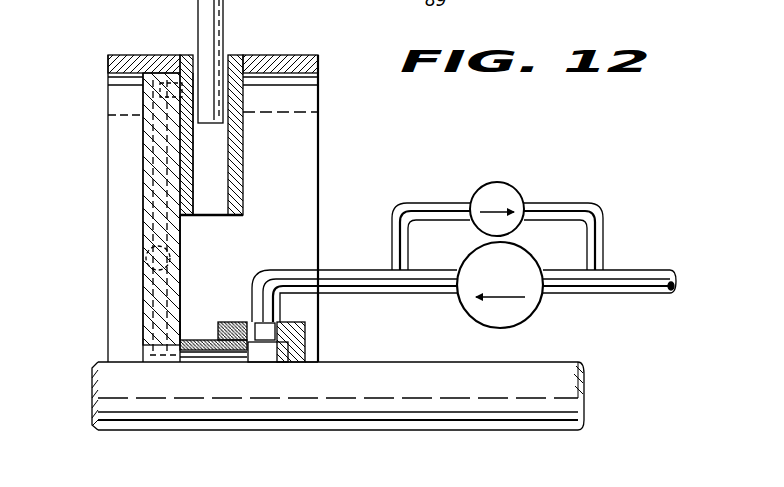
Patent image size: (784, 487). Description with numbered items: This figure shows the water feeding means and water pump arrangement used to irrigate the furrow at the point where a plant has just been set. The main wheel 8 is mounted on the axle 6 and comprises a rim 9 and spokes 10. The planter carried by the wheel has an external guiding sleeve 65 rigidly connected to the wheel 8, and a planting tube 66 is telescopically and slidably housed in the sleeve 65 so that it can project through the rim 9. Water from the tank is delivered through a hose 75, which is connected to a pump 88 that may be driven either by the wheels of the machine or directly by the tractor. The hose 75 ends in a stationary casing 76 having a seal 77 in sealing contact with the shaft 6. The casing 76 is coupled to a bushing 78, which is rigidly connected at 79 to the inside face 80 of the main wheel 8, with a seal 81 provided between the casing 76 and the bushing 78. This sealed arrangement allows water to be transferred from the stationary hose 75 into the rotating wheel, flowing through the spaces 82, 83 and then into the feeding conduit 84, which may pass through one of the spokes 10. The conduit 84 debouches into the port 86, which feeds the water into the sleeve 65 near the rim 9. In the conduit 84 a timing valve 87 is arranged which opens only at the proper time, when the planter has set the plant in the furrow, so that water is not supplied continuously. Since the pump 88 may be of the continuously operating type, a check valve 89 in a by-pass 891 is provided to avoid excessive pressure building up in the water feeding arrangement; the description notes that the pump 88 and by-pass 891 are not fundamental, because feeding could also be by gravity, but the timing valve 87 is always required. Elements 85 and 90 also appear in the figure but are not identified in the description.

The axle 6 is at (389, 428).
The main wheel 8 is at (100, 123).
The rim 9 is at (291, 55).
The spokes 10 is at (140, 163).
The external guiding sleeve 65 is at (243, 200).
The planting tube 66 is at (212, 34).
The hose 75 is at (625, 276).
The stationary casing 76 is at (243, 310).
The seal 77 is at (320, 358).
The bushing 78 is at (207, 322).
The rigid connection 79 is at (184, 329).
The inside face of the main wheel 80 is at (181, 247).
The seal 81 is at (237, 347).
The space 82 is at (272, 358).
The space 83 is at (193, 345).
The feeding conduit 84 is at (128, 308).
The upper seal 85 is at (190, 55).
The discharge port 86 is at (176, 90).
The timing valve 87 is at (132, 266).
The pump 88 is at (528, 318).
The check valve 89 is at (510, 190).
The by-pass 891 is at (573, 203).
The pressure conduit 90 is at (423, 297).